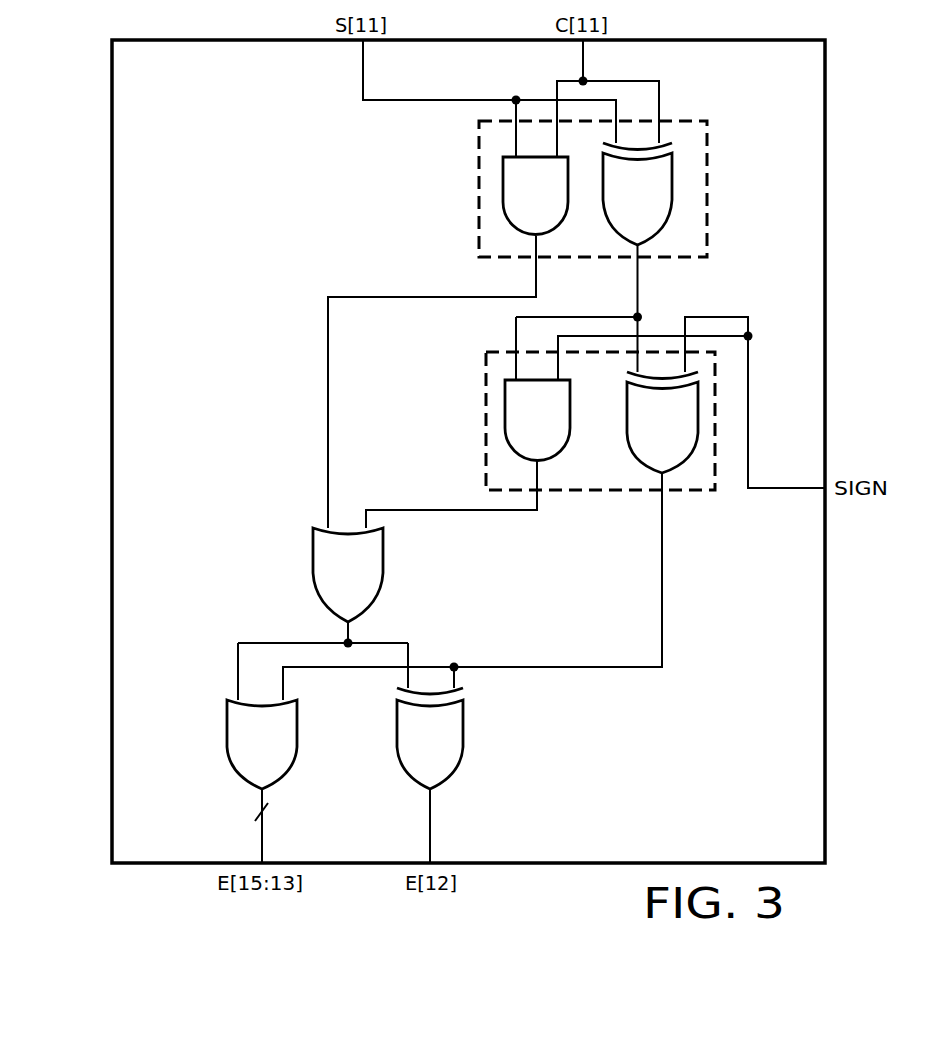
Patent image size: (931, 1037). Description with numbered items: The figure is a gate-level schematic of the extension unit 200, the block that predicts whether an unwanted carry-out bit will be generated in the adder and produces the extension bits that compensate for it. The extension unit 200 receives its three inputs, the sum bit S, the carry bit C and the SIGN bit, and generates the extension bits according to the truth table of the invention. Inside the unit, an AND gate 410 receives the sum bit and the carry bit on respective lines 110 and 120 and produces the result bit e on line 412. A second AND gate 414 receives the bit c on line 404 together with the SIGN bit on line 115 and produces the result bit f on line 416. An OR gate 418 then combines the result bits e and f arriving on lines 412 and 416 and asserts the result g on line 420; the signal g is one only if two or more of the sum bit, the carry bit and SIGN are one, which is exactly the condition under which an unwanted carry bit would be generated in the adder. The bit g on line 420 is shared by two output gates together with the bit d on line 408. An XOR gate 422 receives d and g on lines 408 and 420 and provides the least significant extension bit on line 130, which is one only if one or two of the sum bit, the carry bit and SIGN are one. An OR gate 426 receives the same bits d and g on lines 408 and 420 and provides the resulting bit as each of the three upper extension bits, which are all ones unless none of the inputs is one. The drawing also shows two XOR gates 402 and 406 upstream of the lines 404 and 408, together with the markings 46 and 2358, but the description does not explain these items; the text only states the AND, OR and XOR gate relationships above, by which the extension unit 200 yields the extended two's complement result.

The extension unit 200 is at (112, 262).
The line for sum bit S[11] 110 is at (363, 84).
The line for carry bit C[11] 120 is at (586, 74).
The AND gate 410 is at (557, 203).
The XOR gate 402 is at (658, 200).
The line for bit c 404 is at (637, 290).
The line for result bit e 412 is at (328, 345).
The AND gate 414 is at (559, 430).
The XOR gate 406 is at (683, 430).
The line for result bit f 416 is at (400, 510).
The OR gate 418 is at (369, 578).
The line for bit d 408 is at (662, 530).
The line for result g 420 is at (238, 675).
The OR gate 426 is at (283, 753).
The XOR gate 422 is at (451, 747).
The line for extension bit E[12] 130 is at (458, 838).
The line for SIGN bit 115 is at (748, 432).
The signal label 46 is at (557, 506).
The signal label 2358 is at (692, 631).
The input bit c is at (638, 307).
The input bit d is at (662, 582).
The result bit e is at (328, 370).
The result bit f is at (432, 510).
The result bit g is at (349, 636).